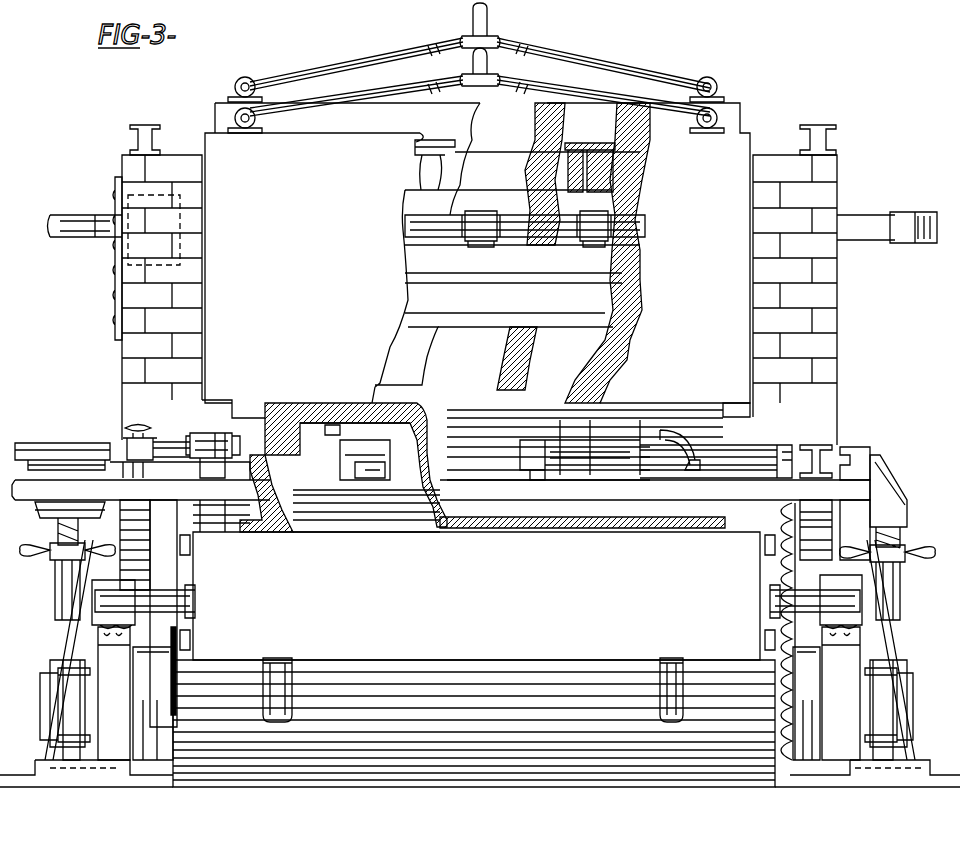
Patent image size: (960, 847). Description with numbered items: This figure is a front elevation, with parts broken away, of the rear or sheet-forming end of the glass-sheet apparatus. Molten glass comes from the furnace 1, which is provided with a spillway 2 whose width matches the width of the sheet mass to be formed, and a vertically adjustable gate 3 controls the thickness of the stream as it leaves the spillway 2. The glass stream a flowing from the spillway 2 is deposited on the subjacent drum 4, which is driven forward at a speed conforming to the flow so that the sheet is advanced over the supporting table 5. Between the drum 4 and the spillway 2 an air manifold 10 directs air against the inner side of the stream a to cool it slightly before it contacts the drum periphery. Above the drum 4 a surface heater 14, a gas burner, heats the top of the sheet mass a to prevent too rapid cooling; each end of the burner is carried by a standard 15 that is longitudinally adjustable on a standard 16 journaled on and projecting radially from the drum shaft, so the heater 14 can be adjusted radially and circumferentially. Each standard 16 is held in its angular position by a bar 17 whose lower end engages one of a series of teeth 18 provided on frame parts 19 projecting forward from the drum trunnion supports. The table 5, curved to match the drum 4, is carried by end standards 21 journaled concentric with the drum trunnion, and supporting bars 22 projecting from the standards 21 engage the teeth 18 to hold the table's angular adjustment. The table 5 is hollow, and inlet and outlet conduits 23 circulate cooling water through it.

The furnace 1 is at (818, 330).
The spillway 2 is at (400, 403).
The vertically adjustable gate 3 is at (680, 270).
The drum 4 is at (565, 690).
The supporting table 5 is at (476, 596).
The air manifold 10 is at (392, 475).
The surface heater 14 is at (745, 462).
The standard 15 is at (48, 560).
The standard 16 is at (52, 672).
The bar 17 is at (68, 694).
The teeth 18 is at (48, 758).
The frame part 19 is at (25, 770).
The end standard 21 is at (479, 693).
The supporting bar 22 is at (110, 710).
The inlet and outlet conduit 23 is at (278, 693).
The glass stream a is at (462, 432).